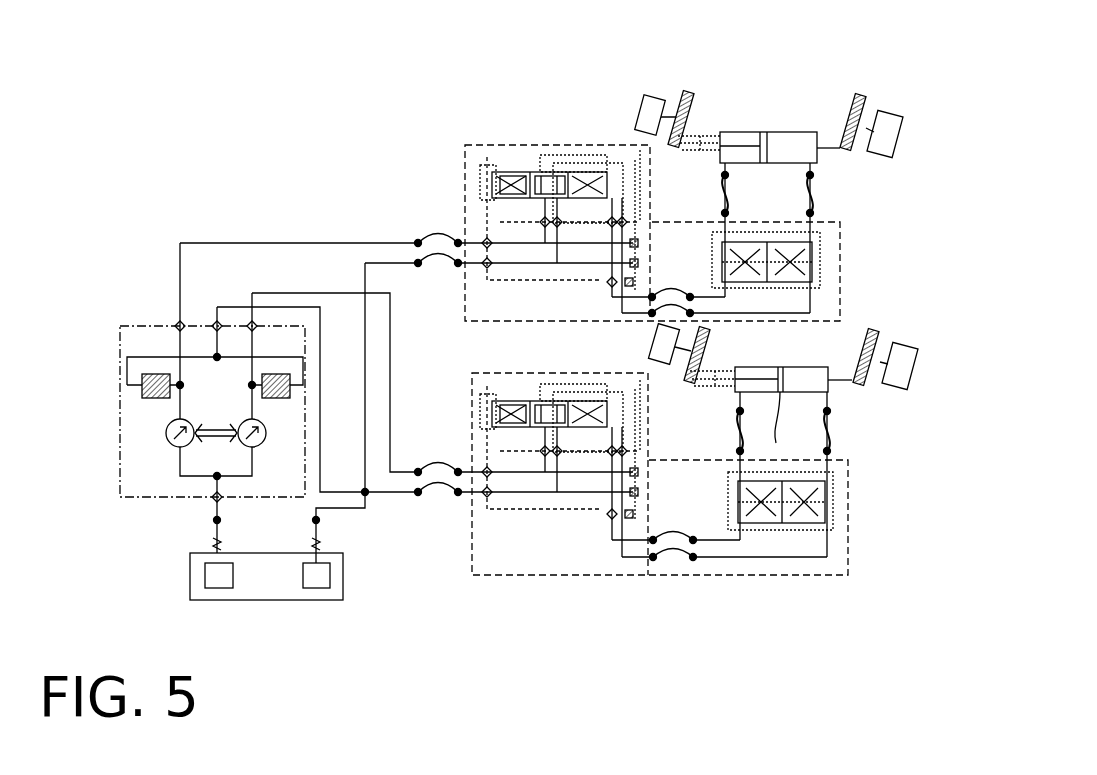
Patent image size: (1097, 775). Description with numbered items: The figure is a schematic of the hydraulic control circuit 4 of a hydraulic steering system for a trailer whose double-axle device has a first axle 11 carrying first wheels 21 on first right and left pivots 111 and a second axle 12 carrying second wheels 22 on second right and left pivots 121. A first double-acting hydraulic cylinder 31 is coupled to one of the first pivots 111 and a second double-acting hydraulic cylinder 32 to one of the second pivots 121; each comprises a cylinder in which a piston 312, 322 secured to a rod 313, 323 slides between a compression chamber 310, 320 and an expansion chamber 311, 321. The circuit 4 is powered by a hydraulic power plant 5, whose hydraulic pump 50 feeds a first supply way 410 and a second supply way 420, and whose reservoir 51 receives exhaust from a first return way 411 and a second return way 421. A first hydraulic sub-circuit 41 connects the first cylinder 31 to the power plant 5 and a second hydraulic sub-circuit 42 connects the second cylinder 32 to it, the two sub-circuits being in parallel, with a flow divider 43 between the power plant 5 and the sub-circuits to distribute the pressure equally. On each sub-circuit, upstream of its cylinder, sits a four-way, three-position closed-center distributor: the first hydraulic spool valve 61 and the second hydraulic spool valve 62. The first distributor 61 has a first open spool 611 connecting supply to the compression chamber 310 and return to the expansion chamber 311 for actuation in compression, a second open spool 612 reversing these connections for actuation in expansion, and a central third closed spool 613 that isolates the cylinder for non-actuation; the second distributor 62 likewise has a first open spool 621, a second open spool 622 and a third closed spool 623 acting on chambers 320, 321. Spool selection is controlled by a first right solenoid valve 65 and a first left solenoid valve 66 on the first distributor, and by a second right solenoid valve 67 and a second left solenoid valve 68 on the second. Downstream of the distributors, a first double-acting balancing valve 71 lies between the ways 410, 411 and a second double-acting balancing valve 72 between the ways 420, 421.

The hydraulic control circuit 4 is at (360, 150).
The hydraulic power plant 5 is at (190, 573).
The first axle 11 is at (870, 75).
The second axle 12 is at (847, 337).
The first wheels 21 is at (642, 96).
The second wheels 22 is at (648, 343).
The first double-acting hydraulic cylinder 31 is at (796, 122).
The second double-acting hydraulic cylinder 32 is at (774, 430).
The first hydraulic sub-circuit 41 is at (465, 150).
The second hydraulic sub-circuit 42 is at (472, 380).
The flow divider 43 is at (152, 326).
The hydraulic pump 50 is at (213, 600).
The reservoir 51 is at (328, 600).
The first hydraulic spool valve 61 is at (488, 185).
The second hydraulic spool valve 62 is at (565, 430).
The first right solenoid valve 65 is at (612, 162).
The first left solenoid valve 66 is at (490, 170).
The second right solenoid valve 67 is at (580, 430).
The second left solenoid valve 68 is at (498, 430).
The first double-acting balancing valve 71 is at (828, 256).
The second double-acting balancing valve 72 is at (853, 487).
The first right and left pivots 111 is at (688, 92).
The second right and left pivots 121 is at (692, 384).
The compression chamber 310 is at (747, 133).
The expansion chamber 311 is at (846, 138).
The piston 312 is at (788, 132).
The rod 313 is at (700, 136).
The compression chamber 320 is at (749, 368).
The expansion chamber 321 is at (818, 367).
The piston 322 is at (830, 384).
The rod 323 is at (772, 424).
The first supply way 410 is at (462, 242).
The first return way 411 is at (470, 266).
The second supply way 420 is at (462, 471).
The second return way 421 is at (470, 495).
The first open spool 611 is at (565, 172).
The second open spool 612 is at (534, 197).
The third closed spool 613 is at (548, 155).
The first open spool 621 is at (572, 400).
The second open spool 622 is at (522, 430).
The third closed spool 623 is at (540, 400).